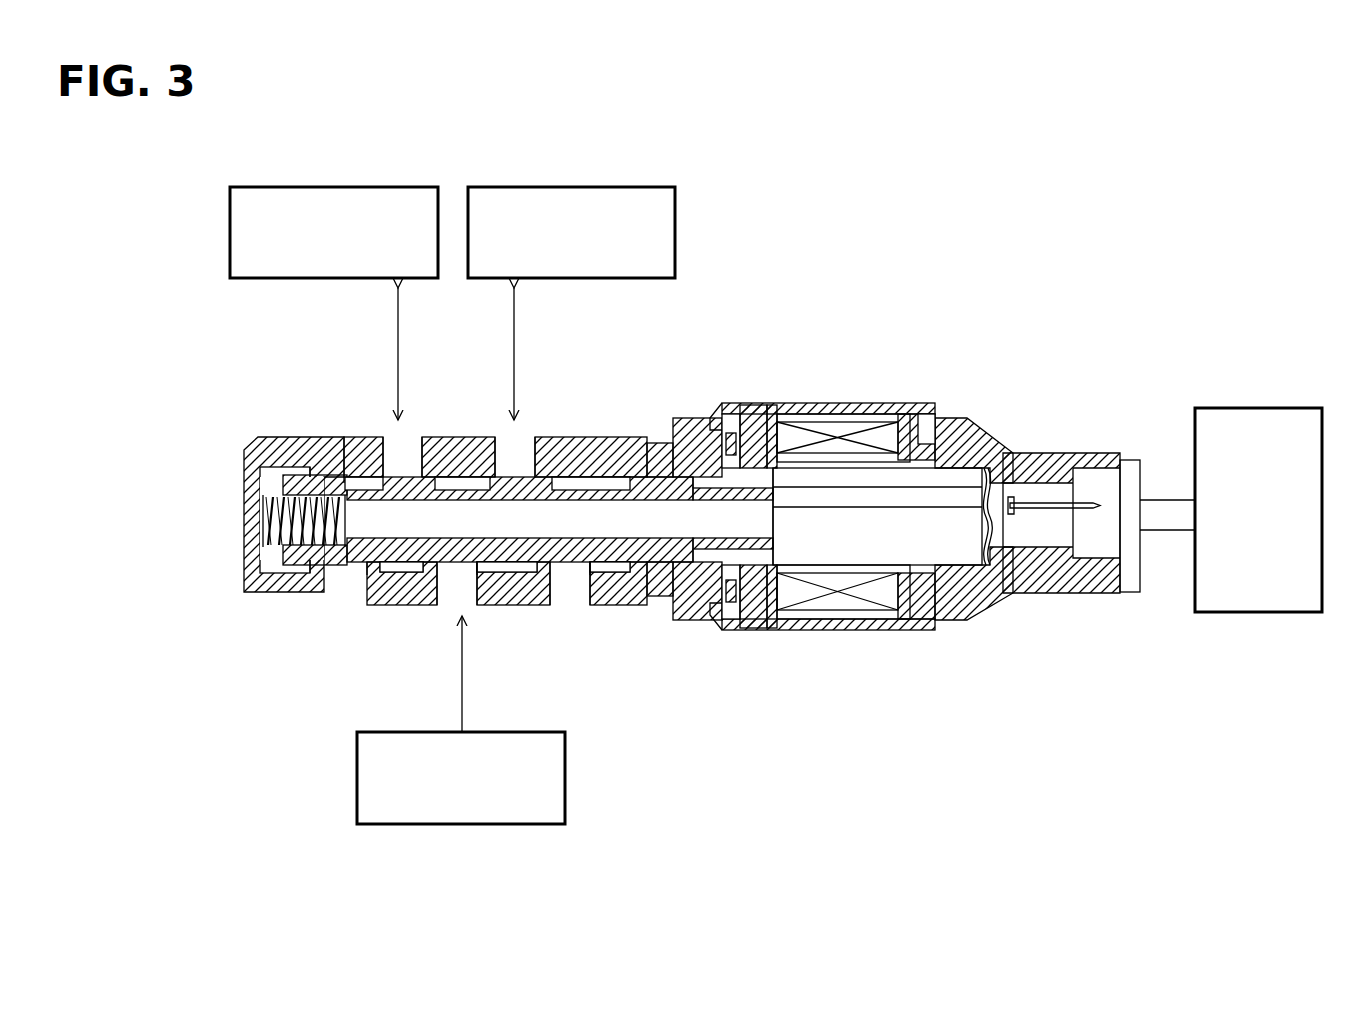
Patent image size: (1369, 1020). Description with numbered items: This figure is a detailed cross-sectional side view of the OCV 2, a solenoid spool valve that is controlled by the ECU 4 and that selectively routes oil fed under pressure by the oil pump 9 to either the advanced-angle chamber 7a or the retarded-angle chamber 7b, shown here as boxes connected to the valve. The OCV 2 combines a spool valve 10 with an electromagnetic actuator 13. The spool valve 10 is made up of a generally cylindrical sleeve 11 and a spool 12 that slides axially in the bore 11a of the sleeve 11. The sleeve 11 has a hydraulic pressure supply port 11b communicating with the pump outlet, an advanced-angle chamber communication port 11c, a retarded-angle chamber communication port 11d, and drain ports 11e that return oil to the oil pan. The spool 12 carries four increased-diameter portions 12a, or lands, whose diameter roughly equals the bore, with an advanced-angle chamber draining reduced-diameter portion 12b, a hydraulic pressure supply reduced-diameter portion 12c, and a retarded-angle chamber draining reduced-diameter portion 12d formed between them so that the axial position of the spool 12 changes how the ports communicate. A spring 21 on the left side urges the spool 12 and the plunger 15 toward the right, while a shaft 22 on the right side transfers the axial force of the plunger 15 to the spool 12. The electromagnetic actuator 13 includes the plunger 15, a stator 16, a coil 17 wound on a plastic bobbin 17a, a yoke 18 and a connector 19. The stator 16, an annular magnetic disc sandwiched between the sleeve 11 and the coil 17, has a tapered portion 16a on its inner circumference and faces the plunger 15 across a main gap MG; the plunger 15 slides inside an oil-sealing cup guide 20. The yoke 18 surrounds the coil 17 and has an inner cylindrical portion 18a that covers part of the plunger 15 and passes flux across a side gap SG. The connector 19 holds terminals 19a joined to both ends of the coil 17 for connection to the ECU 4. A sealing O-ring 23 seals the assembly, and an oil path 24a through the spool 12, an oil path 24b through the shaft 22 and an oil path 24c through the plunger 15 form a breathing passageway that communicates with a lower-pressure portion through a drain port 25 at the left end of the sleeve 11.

The OCV 2 is at (880, 310).
The ECU 4 is at (1278, 408).
The advanced-angle chamber 7a is at (398, 187).
The retarded-angle chamber 7b is at (630, 187).
The oil pump 9 is at (565, 782).
The spool valve 10 is at (248, 606).
The sleeve 11 is at (263, 440).
The bore 11a is at (337, 440).
The hydraulic pressure supply port 11b is at (445, 600).
The advanced-angle chamber communication port 11c is at (393, 443).
The retarded-angle chamber communication port 11d is at (507, 443).
The drain ports 11e is at (344, 585).
The spool 12 is at (367, 512).
The increased-diameter portions 12a is at (285, 440).
The advanced-angle chamber draining reduced-diameter portion 12b is at (370, 568).
The hydraulic pressure supply reduced-diameter portion 12c is at (485, 565).
The retarded-angle chamber draining reduced-diameter portion 12d is at (585, 565).
The electromagnetic actuator 13 is at (856, 641).
The plunger 15 is at (900, 555).
The stator 16 is at (752, 435).
The tapered portion 16a is at (773, 437).
The coil 17 is at (822, 430).
The bobbin 17a is at (853, 417).
The yoke 18 is at (903, 408).
The inner cylindrical portion 18a is at (957, 432).
The connector 19 is at (1118, 437).
The terminals 19a is at (1048, 500).
The cup guide 20 is at (993, 562).
The spring 21 is at (300, 575).
The shaft 22 is at (690, 480).
The sealing O-ring 23 is at (729, 434).
The oil path 24a is at (613, 527).
The oil path 24b is at (673, 527).
The oil path 24c is at (953, 497).
The drain port 25 is at (248, 530).
The main gap MG is at (770, 575).
The side gap SG is at (954, 578).